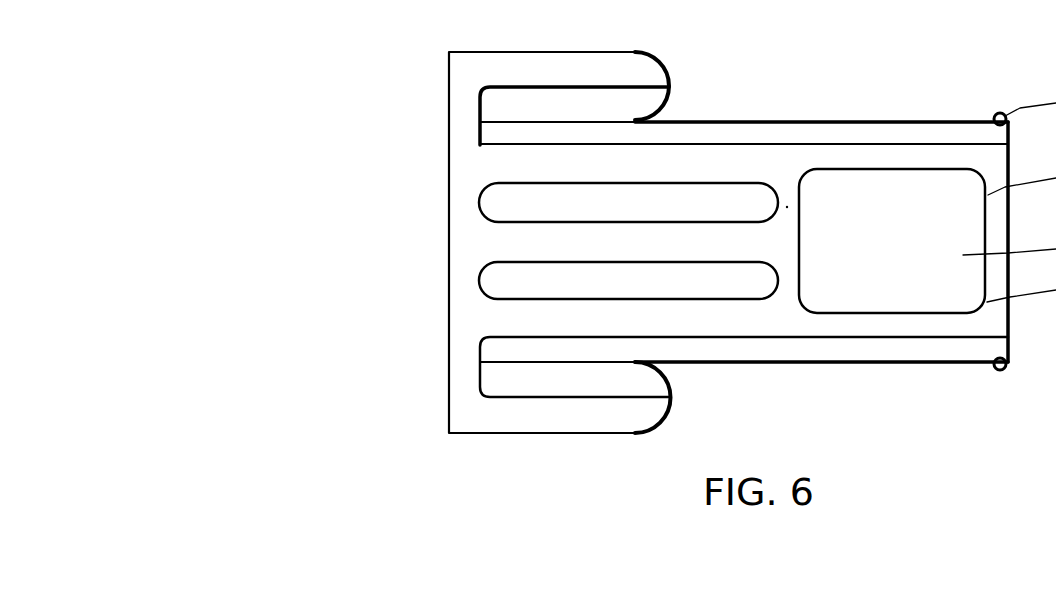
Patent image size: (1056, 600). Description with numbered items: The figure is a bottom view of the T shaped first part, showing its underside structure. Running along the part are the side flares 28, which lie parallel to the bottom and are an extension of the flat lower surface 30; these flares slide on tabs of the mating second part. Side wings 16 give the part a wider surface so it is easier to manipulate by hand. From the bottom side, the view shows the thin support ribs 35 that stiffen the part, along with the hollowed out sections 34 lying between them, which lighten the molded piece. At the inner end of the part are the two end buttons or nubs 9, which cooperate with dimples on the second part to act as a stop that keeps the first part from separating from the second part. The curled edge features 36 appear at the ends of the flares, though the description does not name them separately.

The support ribs 35 is at (503, 165).
The curled flange 36 is at (610, 68).
The side wings 16 is at (637, 110).
The side flares 28 is at (875, 130).
The end buttons or nubs 9 is at (1008, 368).
The hollowed out sections 34 is at (508, 205).
The flat lower surface 30 is at (1010, 211).